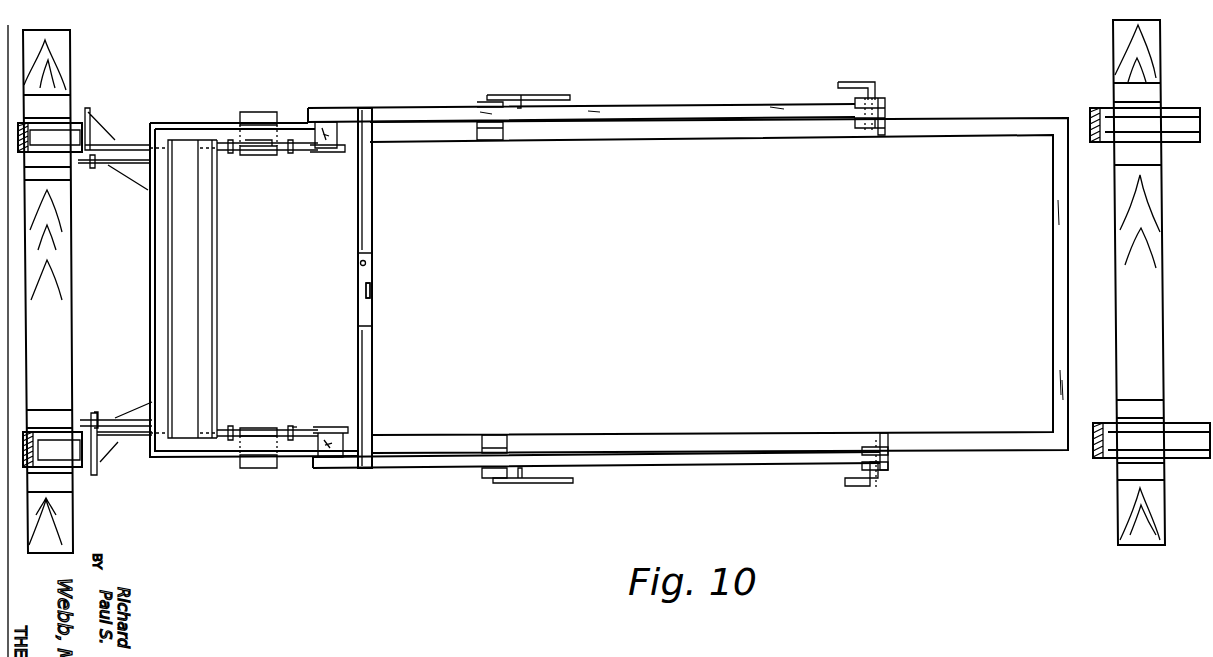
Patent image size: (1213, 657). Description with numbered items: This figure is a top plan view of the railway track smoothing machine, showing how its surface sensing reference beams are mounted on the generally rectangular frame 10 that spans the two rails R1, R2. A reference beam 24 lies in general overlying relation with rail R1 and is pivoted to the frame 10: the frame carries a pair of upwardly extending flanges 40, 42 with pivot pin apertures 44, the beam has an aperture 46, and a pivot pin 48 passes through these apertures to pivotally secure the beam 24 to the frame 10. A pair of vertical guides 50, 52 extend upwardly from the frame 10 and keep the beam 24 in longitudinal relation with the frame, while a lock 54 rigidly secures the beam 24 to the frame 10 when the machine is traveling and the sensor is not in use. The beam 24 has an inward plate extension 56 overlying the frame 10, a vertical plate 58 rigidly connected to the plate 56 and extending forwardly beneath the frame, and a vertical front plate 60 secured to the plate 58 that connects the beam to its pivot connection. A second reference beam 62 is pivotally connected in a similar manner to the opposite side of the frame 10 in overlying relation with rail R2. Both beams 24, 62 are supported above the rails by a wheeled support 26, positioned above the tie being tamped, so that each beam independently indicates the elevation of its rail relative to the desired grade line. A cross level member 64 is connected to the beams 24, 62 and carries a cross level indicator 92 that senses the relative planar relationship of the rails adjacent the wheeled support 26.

The rail R2 is at (66, 135).
The rail R1 is at (65, 452).
The frame 10 is at (694, 138).
The reference beam 24 is at (742, 466).
The wheeled support 26 is at (253, 152).
The upwardly extending flange 40 is at (883, 438).
The upwardly extending flange 42 is at (890, 470).
The pivot pin aperture 44 is at (876, 490).
The aperture 46 is at (888, 460).
The pivot pin 48 is at (856, 486).
The vertical guide 50 is at (496, 448).
The vertical guide 52 is at (490, 478).
The lock 54 is at (538, 486).
The inward plate extension 56 is at (344, 446).
The vertical plate 58 is at (300, 436).
The vertical front plate 60 is at (100, 460).
The second reference beam 62 is at (690, 108).
The cross level member 64 is at (391, 214).
The cross level indicator 92 is at (370, 315).